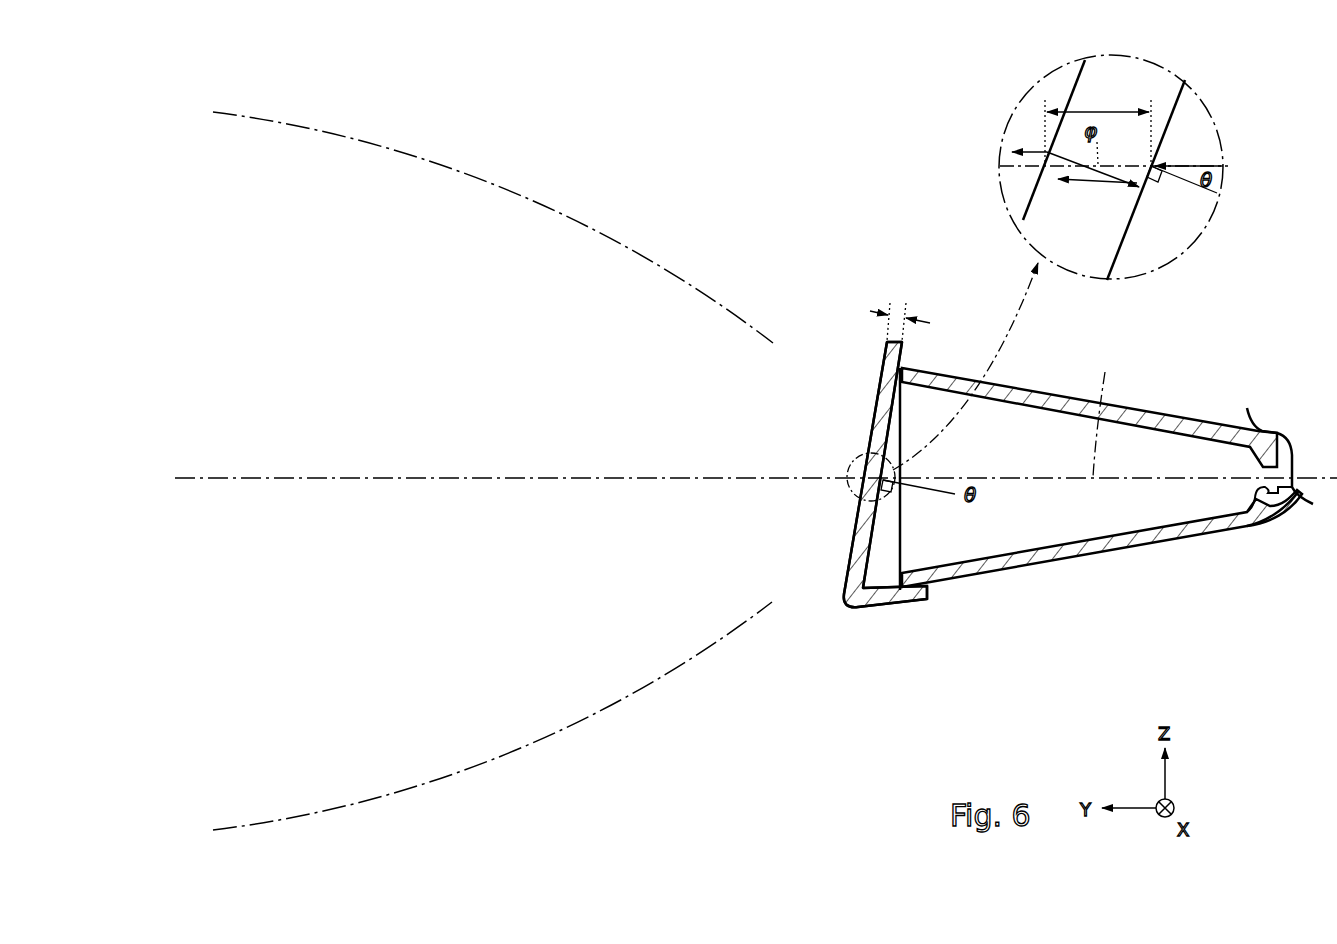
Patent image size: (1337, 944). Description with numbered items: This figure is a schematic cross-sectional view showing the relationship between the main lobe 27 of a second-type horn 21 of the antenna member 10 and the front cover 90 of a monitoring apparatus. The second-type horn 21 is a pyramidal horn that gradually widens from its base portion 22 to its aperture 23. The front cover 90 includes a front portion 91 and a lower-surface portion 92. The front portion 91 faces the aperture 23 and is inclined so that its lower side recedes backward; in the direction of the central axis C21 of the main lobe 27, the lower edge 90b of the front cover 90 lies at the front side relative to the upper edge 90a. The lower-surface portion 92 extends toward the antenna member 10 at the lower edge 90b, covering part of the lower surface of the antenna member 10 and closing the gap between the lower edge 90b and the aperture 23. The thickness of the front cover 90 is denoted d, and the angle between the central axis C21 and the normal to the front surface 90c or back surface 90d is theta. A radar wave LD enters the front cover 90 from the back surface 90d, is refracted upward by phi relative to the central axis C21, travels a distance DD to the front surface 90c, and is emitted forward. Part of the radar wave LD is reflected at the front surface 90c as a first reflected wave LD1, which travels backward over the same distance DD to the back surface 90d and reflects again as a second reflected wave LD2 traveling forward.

The antenna member 10 is at (1163, 542).
The second-type horn 21 is at (914, 391).
The base portion 22 is at (1259, 505).
The aperture 23 is at (896, 580).
The main lobe 27 is at (398, 150).
The front cover 90 is at (843, 571).
The upper edge 90a is at (900, 346).
The lower edge 90b is at (846, 605).
The front surface 90c is at (859, 513).
The back surface 90d is at (874, 524).
The front portion 91 is at (872, 441).
The lower-surface portion 92 is at (872, 602).
The central axis C21 is at (1019, 168).
The thickness d is at (900, 314).
The distance of travel DD is at (1098, 126).
The radar wave LD is at (1190, 165).
The first reflected wave LD1 is at (1094, 182).
The second reflected wave LD2 is at (1078, 182).